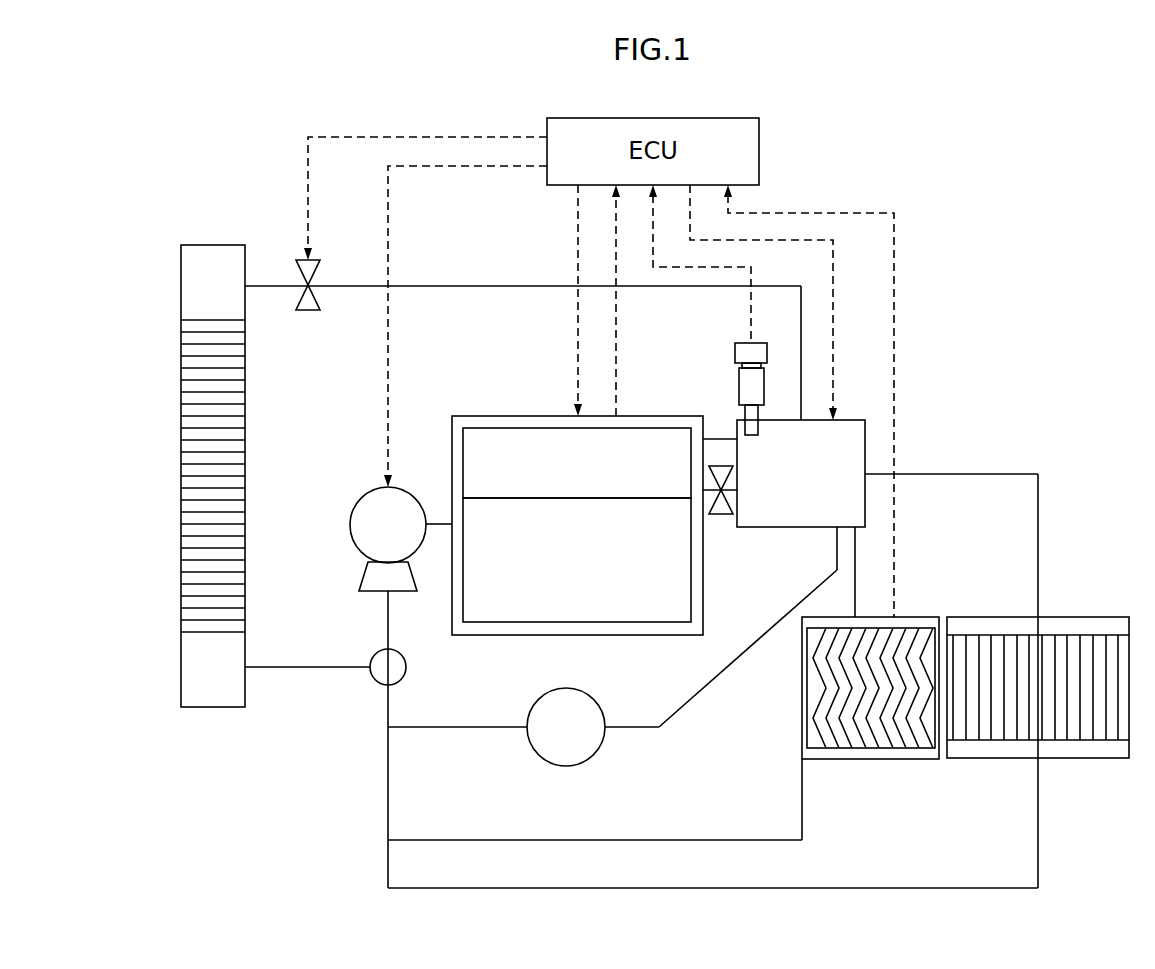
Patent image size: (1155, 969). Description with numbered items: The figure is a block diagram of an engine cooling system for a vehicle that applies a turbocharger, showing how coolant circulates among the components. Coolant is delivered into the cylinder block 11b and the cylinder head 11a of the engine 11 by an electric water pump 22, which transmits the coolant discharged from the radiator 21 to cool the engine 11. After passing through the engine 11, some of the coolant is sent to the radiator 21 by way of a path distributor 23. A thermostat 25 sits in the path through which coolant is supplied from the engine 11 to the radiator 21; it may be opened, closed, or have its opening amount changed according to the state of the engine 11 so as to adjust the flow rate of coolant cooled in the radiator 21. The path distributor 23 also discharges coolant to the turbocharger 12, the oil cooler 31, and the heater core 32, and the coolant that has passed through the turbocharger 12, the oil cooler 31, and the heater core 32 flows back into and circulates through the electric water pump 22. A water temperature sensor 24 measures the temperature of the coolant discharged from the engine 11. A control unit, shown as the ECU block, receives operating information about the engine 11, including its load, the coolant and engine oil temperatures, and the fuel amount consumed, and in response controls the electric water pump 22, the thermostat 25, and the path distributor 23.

The engine 11 is at (620, 480).
The cylinder head 11a is at (532, 428).
The cylinder block 11b is at (691, 590).
The turbocharger 12 is at (592, 755).
The radiator 21 is at (195, 290).
The electric water pump 22 is at (358, 500).
The path distributor 23 is at (865, 438).
The water temperature sensor 24 is at (767, 351).
The thermostat 25 is at (298, 252).
The oil cooler 31 is at (922, 617).
The heater core 32 is at (1088, 617).